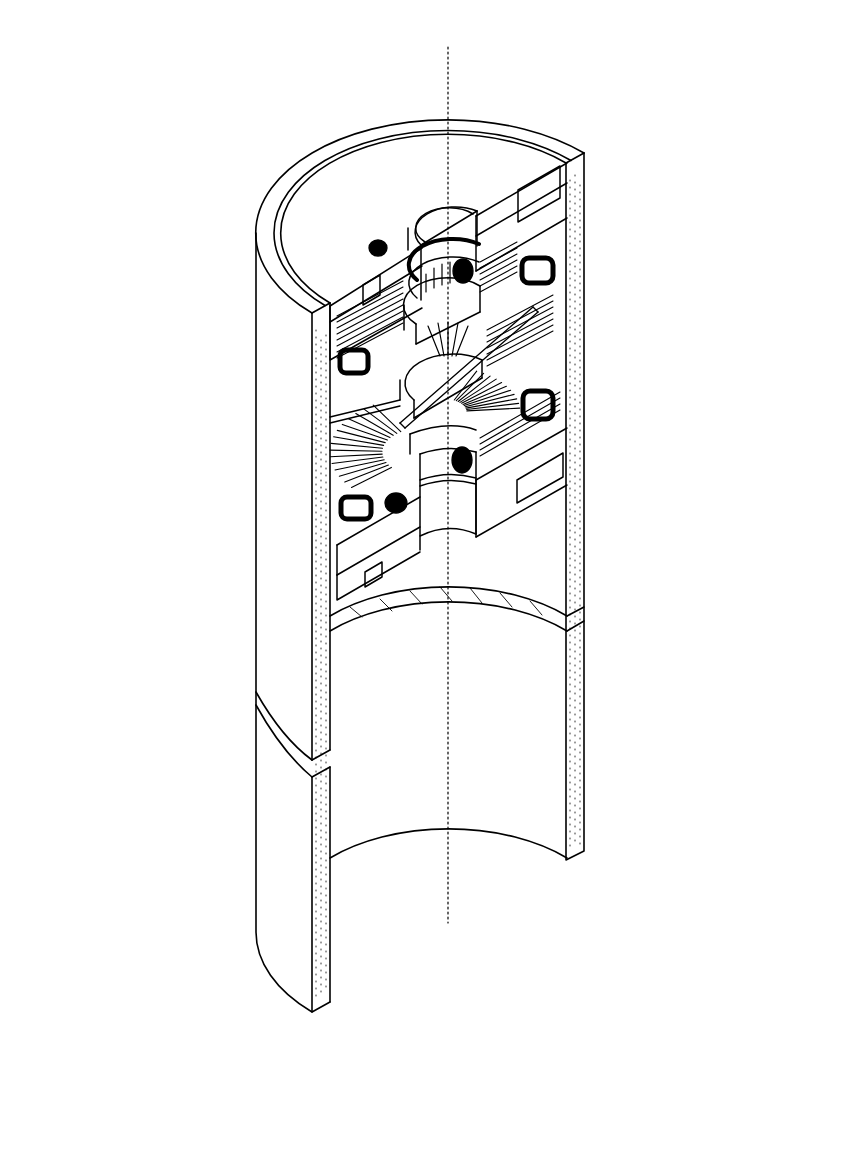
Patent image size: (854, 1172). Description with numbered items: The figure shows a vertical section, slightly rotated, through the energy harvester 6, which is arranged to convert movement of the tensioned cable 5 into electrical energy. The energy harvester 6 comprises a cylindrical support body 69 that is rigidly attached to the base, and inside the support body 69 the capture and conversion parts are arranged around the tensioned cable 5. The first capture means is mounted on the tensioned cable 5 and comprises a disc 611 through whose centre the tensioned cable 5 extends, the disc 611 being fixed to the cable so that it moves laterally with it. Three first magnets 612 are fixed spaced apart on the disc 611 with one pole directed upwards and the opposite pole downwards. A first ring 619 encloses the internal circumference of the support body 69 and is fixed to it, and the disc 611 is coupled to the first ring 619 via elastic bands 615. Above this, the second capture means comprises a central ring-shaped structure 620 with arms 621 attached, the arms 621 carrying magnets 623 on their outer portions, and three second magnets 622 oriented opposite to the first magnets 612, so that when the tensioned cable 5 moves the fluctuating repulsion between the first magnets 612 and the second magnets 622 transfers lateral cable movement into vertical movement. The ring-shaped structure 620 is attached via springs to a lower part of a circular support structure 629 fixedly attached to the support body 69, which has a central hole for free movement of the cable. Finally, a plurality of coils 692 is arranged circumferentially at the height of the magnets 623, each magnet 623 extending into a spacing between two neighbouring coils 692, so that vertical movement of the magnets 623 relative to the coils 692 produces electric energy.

The energy harvester 6 is at (190, 525).
The cylindrical support body 69 is at (583, 568).
The tensioned cable 5 is at (448, 678).
The circular support structure 629 is at (480, 175).
The central ring-shaped structure 620 is at (415, 298).
The arms 621 is at (380, 295).
The coils 692 is at (560, 238).
The magnets 623 is at (548, 272).
The elastic bands 615 is at (530, 320).
The second magnets 622 is at (560, 348).
The disc 611 is at (560, 390).
The first magnets 612 is at (560, 448).
The first ring 619 is at (340, 453).